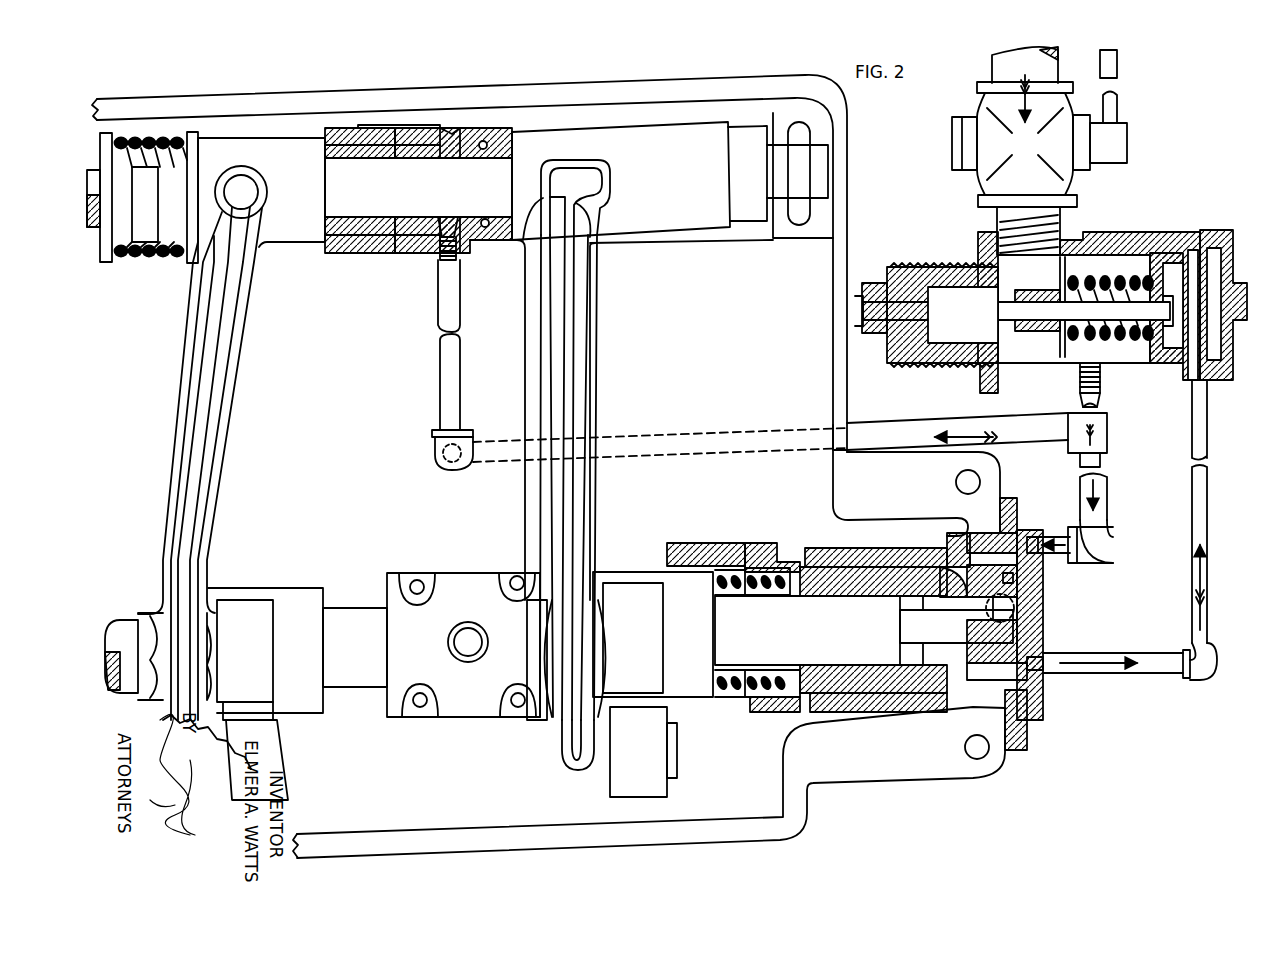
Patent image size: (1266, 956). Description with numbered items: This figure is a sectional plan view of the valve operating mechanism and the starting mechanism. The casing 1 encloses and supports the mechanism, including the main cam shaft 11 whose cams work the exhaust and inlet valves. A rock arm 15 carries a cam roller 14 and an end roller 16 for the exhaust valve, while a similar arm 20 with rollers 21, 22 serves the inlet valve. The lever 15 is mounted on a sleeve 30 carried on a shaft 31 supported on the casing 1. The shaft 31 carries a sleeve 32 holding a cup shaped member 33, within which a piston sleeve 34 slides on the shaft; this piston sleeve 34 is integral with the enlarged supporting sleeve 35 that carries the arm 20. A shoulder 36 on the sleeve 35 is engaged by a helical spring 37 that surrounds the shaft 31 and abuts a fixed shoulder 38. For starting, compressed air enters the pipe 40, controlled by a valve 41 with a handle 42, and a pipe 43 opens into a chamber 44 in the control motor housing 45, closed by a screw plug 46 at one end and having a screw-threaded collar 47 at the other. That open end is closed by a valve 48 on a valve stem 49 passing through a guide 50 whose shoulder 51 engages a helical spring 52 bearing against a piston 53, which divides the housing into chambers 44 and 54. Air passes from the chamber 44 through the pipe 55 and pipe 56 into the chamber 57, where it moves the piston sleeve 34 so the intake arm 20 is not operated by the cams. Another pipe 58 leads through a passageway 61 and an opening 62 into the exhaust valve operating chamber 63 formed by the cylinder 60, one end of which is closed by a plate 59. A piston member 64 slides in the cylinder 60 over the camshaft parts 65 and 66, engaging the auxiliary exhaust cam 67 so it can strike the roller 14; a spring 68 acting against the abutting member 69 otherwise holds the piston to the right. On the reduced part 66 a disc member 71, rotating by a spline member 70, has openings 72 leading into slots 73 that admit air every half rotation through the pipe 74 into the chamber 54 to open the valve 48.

The casing 1 is at (842, 185).
The main cam shaft 11 is at (354, 610).
The cam roller 14 is at (642, 596).
The rock arm 15 is at (590, 484).
The roller 16 is at (660, 782).
The arm 20 is at (226, 468).
The roller 21 is at (252, 600).
The roller 22 is at (290, 745).
The sleeve 30 is at (690, 220).
The shaft 31 is at (494, 170).
The sleeve 32 is at (453, 135).
The cup shaped member 33 is at (395, 130).
The piston sleeve 34 is at (358, 135).
The enlarged supporting sleeve 35 is at (257, 152).
The shoulder 36 is at (192, 140).
The helical spring 37 is at (147, 150).
The fixed shoulder 38 is at (107, 140).
The pipe 40 is at (1050, 75).
The valve 41 is at (1100, 140).
The handle 42 is at (1117, 105).
The pipe 43 is at (1058, 212).
The chamber 44 is at (1105, 258).
The control motor housing 45 is at (1168, 252).
The screw plug 46 is at (1225, 235).
The screw-threaded collar 47 is at (945, 365).
The valve 48 is at (874, 285).
The valve stem 49 is at (955, 305).
The guide 50 is at (1030, 292).
The shoulder 51 is at (1060, 290).
The helical spring 52 is at (1085, 290).
The piston 53 is at (1160, 298).
The chamber 54 is at (1193, 258).
The pipe 55 is at (1100, 403).
The pipe 56 is at (900, 437).
The chamber 57 is at (458, 235).
The pipe 58 is at (1103, 493).
The plate 59 is at (1043, 598).
The cylinder 60 is at (1027, 733).
The passageway 61 is at (1005, 550).
The opening 62 is at (955, 560).
The exhaust valve operating chamber 63 is at (932, 565).
The piston member 64 is at (826, 550).
The camshaft part 65 is at (850, 600).
The reduced part 66 is at (925, 626).
The auxiliary exhaust cam 67 is at (700, 550).
The spring 68 is at (755, 555).
The abutting member 69 is at (695, 690).
The spline member 70 is at (1025, 612).
The disc member 71 is at (1003, 603).
The openings 72 is at (1020, 680).
The slots 73 is at (1047, 580).
The pipe 74 is at (1167, 660).